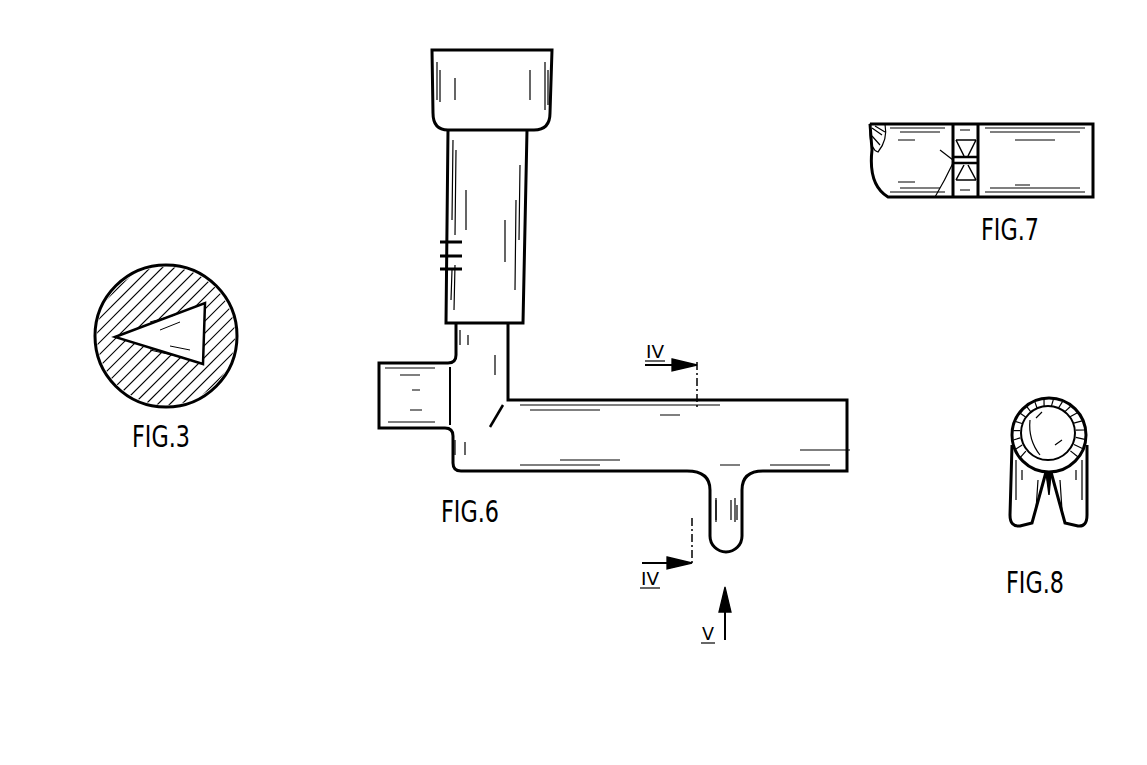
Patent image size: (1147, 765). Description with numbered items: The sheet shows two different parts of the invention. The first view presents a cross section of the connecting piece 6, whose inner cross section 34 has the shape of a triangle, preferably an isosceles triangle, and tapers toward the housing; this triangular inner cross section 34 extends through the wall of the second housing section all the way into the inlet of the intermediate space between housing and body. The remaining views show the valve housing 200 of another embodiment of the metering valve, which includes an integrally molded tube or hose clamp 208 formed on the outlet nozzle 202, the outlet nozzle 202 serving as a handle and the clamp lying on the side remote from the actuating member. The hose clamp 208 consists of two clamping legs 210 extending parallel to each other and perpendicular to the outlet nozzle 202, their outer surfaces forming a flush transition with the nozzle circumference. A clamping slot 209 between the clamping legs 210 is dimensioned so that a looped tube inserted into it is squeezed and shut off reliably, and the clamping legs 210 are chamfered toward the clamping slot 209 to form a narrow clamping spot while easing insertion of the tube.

In FIG. 3, the connecting piece 6 is at (180, 277).
In FIG. 3, the inner cross section 34 is at (192, 325).
In FIG. 6, the valve housing 200 is at (614, 301).
In FIG. 6, the outlet nozzle 202 is at (577, 430).
In FIG. 7, the outlet nozzle 202 is at (1023, 150).
In FIG. 8, the outlet nozzle 202 is at (1040, 398).
In FIG. 6, the hose clamp 208 is at (712, 498).
In FIG. 7, the hose clamp 208 is at (940, 160).
In FIG. 7, the clamping slot 209 is at (935, 197).
In FIG. 8, the clamping slot 209 is at (1050, 487).
In FIG. 6, the clamping legs 210 is at (727, 519).
In FIG. 7, the clamping legs 210 is at (982, 168).
In FIG. 8, the clamping legs 210 is at (1072, 505).